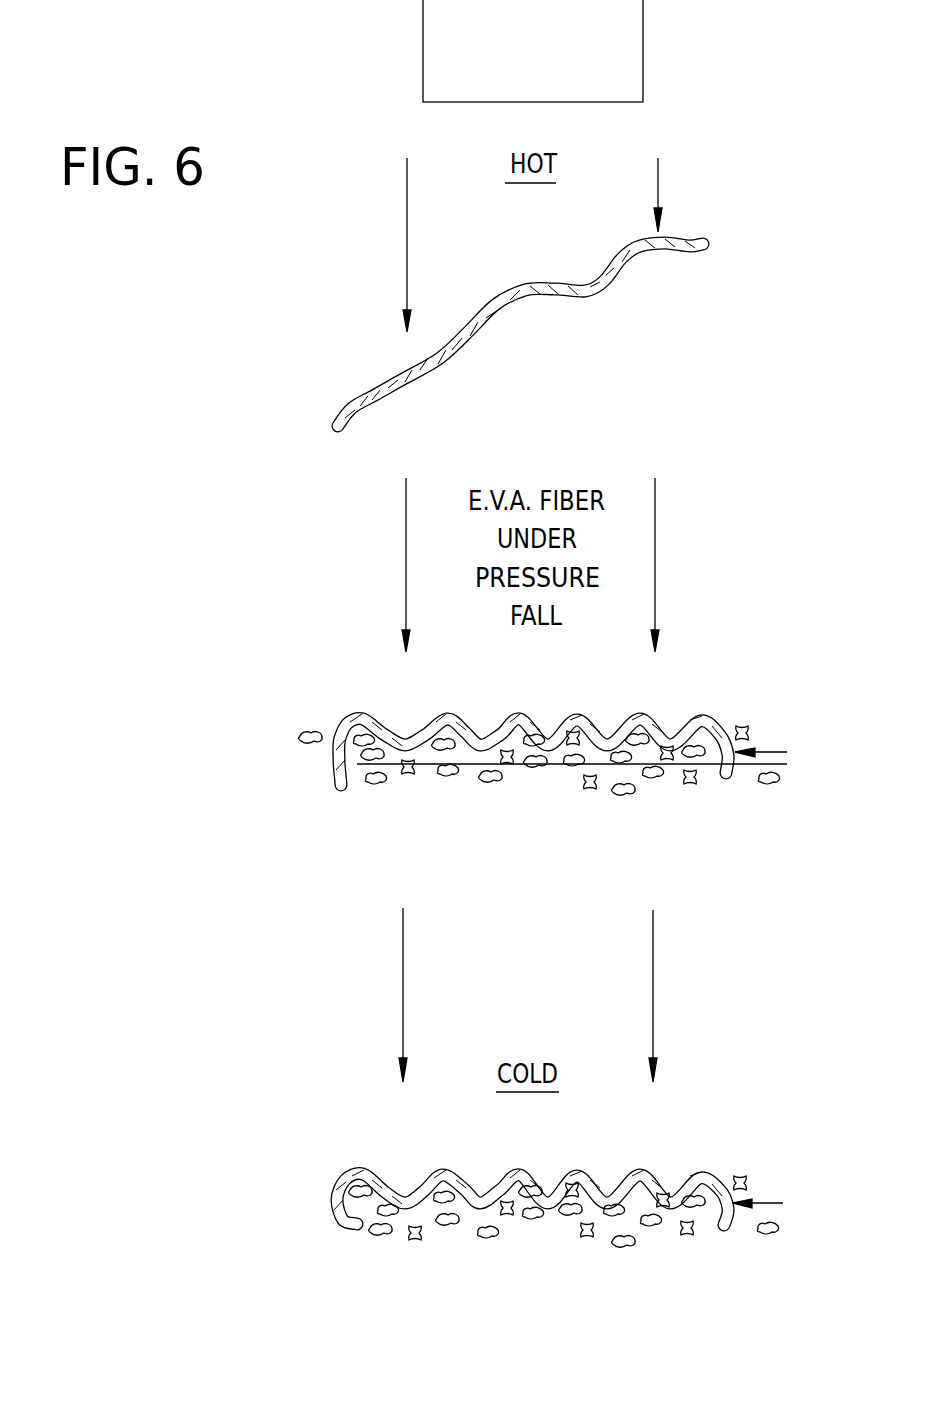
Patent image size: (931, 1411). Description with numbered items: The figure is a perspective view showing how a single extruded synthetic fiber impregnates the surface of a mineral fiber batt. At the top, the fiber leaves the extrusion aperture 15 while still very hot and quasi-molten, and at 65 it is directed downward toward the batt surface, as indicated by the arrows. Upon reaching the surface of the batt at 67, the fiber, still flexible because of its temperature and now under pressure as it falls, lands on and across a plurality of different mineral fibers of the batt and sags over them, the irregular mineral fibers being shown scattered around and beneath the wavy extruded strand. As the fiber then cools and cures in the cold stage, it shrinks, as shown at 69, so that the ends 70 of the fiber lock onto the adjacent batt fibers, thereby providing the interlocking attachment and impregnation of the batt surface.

The extrusion aperture 15 is at (423, 38).
The directing of extruded fibers toward batt surface 65 is at (578, 356).
The arrival of fiber at batt surface 67 is at (818, 758).
The shrinking of fiber upon cooling 69 is at (265, 1205).
The ends of fiber 70 is at (345, 1228).